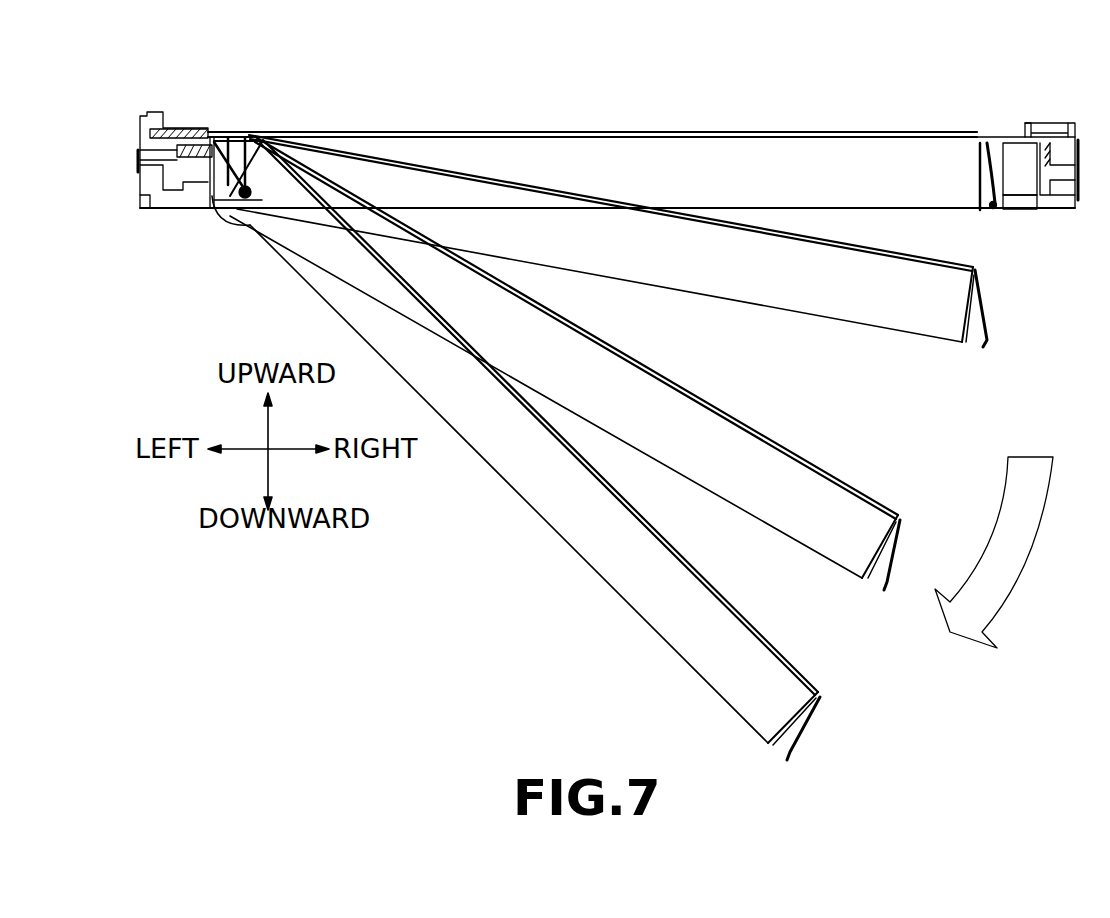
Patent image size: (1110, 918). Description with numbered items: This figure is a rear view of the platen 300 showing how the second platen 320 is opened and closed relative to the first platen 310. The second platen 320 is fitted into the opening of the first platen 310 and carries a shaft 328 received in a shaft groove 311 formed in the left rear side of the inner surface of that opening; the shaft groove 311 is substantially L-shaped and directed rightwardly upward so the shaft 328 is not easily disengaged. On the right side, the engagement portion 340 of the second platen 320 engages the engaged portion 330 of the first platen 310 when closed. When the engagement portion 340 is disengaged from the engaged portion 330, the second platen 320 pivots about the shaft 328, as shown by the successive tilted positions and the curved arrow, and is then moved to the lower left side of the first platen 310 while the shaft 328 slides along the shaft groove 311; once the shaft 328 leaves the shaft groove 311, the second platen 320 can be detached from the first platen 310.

The display device 300 is at (920, 110).
The first platen 310 is at (1010, 135).
The shaft groove 311 is at (258, 130).
The second platen 320 is at (656, 606).
The shaft 328 is at (237, 222).
The engaged portion 330 is at (992, 212).
The engagement portion 340 is at (976, 343).